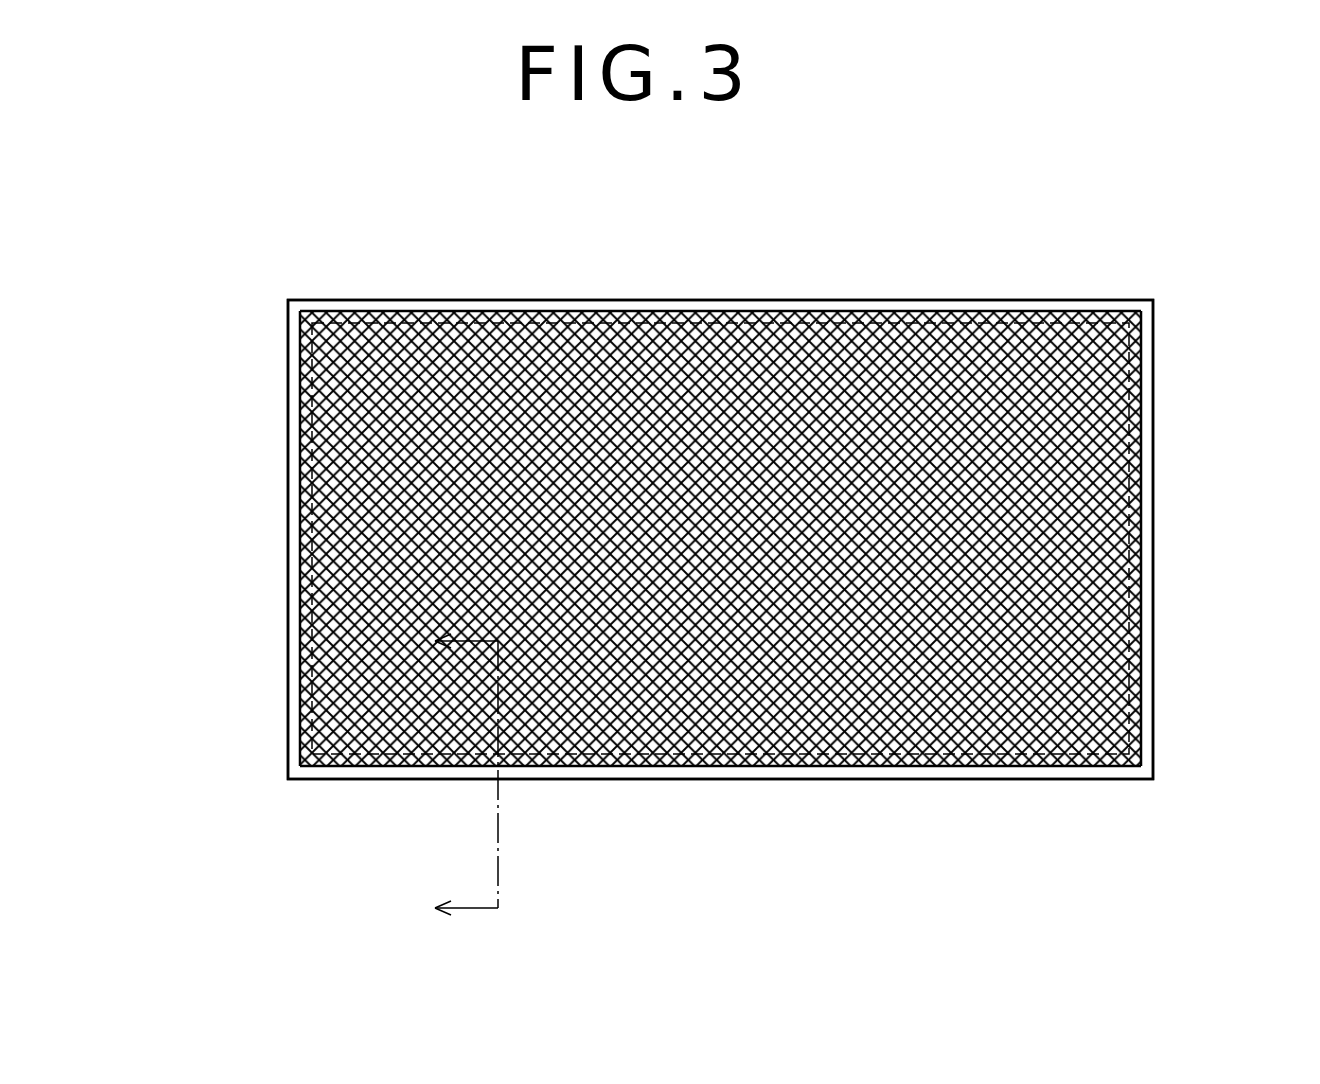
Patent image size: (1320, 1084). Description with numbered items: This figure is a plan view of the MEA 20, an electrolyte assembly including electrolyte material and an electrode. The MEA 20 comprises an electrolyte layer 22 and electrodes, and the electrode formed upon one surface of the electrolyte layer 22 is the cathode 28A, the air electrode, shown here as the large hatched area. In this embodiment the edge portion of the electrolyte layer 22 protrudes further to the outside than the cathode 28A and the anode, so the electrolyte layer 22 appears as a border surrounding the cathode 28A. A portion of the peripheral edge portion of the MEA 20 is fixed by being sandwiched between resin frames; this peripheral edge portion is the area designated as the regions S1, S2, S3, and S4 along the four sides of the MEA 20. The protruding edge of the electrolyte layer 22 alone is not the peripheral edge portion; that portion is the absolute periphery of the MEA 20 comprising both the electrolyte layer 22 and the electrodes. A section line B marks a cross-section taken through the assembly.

The MEA 20 is at (973, 291).
The electrolyte layer 22 is at (1148, 327).
The cathode 28A is at (981, 723).
The region S1 is at (305, 472).
The region S2 is at (1142, 470).
The region S3 is at (658, 322).
The region S4 is at (782, 766).
The section line B- B is at (471, 775).